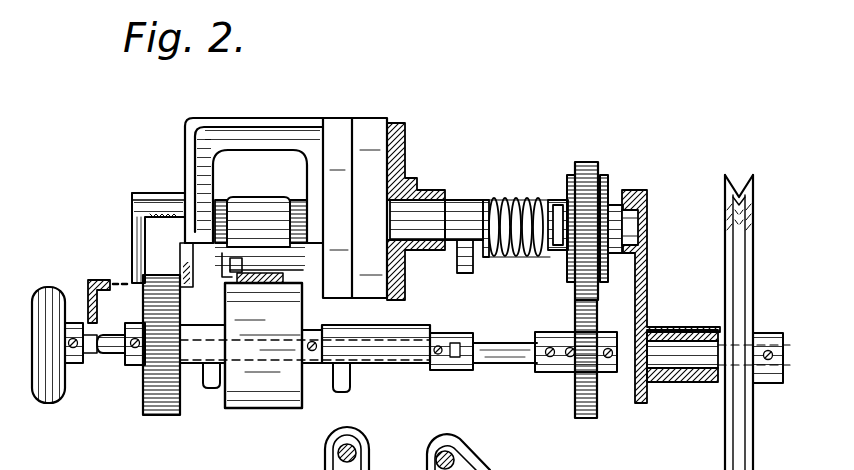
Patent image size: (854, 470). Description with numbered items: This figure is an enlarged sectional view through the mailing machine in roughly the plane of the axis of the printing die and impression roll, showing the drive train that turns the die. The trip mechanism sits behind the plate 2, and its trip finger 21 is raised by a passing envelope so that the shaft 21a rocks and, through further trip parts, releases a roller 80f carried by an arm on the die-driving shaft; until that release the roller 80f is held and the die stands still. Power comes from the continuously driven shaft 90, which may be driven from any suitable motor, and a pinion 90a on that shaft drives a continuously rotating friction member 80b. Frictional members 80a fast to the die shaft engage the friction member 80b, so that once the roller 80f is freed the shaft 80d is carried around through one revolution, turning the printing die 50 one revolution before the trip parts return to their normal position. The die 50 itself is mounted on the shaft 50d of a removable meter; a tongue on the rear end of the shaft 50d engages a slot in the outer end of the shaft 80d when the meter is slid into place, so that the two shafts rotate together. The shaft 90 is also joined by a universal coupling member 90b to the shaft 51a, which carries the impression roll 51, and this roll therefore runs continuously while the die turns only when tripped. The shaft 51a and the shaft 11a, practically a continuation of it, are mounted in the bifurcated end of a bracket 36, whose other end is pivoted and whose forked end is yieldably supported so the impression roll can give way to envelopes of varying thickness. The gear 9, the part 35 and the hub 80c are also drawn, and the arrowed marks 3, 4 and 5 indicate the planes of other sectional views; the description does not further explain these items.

The plate 2 is at (397, 131).
The section line 3 is at (430, 163).
The section line 4 is at (207, 173).
The section line 5 is at (130, 280).
The gear 9 is at (152, 393).
The shaft 11a is at (108, 352).
The trip finger 21 is at (146, 259).
The shaft 21a is at (130, 206).
The stop bracket 35 is at (98, 282).
The bracket 36 is at (210, 390).
The printing die 50 is at (228, 262).
The shaft 50d is at (220, 218).
The impression roll 51 is at (235, 304).
The shaft 51a is at (408, 350).
The frictional members 80a is at (568, 179).
The friction member 80b is at (588, 163).
The clutch hub 80c is at (646, 231).
The shaft 80d is at (427, 218).
The roller 80f is at (463, 244).
The shaft 90 is at (683, 354).
The pinion 90a is at (585, 419).
The universal coupling member 90b is at (508, 360).